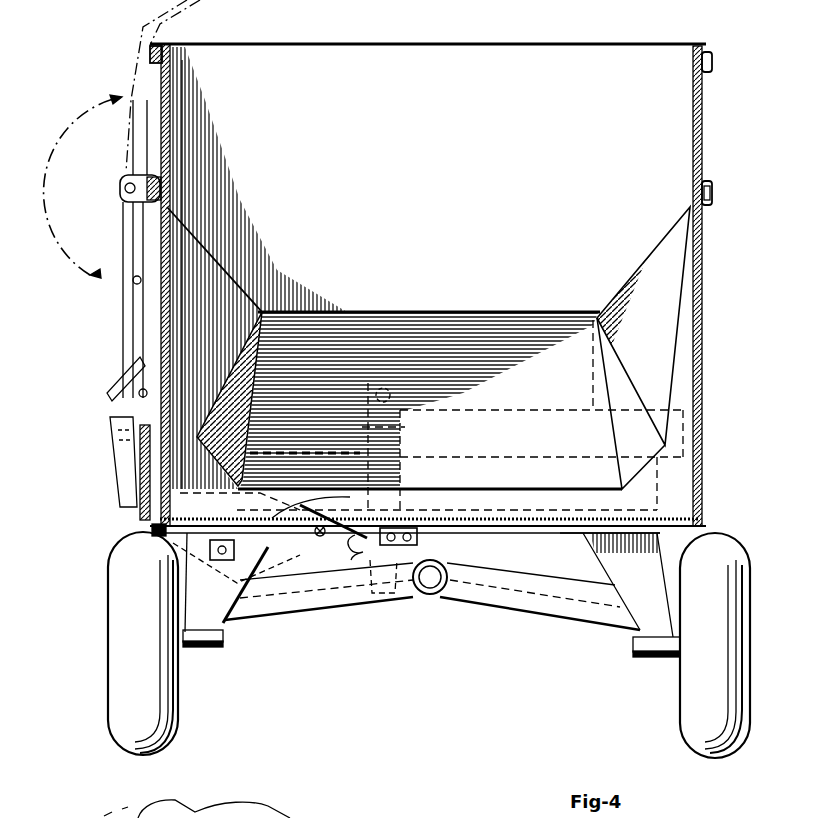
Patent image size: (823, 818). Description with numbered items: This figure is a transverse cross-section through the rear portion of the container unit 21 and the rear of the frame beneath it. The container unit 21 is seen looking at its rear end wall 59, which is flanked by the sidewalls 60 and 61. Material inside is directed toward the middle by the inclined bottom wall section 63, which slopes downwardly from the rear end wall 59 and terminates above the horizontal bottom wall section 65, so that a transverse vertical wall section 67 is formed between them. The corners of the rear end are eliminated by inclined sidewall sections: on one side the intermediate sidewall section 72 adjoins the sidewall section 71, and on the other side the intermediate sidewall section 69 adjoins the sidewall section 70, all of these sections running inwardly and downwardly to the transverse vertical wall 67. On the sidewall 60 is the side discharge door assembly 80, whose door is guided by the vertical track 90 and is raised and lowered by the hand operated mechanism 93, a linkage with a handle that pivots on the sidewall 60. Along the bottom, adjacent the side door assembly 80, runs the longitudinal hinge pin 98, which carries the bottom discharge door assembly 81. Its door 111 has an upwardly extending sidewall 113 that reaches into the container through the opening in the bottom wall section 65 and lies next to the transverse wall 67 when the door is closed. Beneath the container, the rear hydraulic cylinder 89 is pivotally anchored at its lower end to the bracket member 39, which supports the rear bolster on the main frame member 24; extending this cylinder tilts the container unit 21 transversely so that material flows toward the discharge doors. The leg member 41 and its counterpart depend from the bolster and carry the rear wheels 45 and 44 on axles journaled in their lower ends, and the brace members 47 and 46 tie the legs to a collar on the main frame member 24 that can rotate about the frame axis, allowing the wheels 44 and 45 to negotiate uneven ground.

The container unit 21 is at (706, 287).
The rear end wall 59 is at (512, 159).
The sidewall 60 is at (172, 152).
The sidewall 61 is at (705, 345).
The hand operated mechanism 93 is at (122, 222).
The side discharge door assembly 80 is at (147, 410).
The vertical track 90 is at (113, 469).
The intermediate sidewall section 72 is at (224, 338).
The sidewall section 71 is at (232, 432).
The inclined bottom wall section 63 is at (517, 445).
The sidewall of bottom discharge door 113 is at (305, 441).
The rear hydraulic cylinder 89 is at (413, 429).
The bottom discharge door 111 is at (316, 503).
The intermediate sidewall section 69 is at (659, 320).
The sidewall section 70 is at (645, 445).
The transverse vertical wall section 67 is at (527, 513).
The hinge pin 98 is at (160, 538).
The bottom discharge door assembly 81 is at (258, 539).
The bracket member 39 is at (437, 568).
The horizontal bottom wall section 65 is at (510, 535).
The main frame member 24 is at (433, 597).
The brace member 47 is at (325, 608).
The brace member 46 is at (524, 603).
The leg member 41 is at (230, 616).
The rear wheel 45 is at (178, 707).
The rear wheel 44 is at (677, 700).